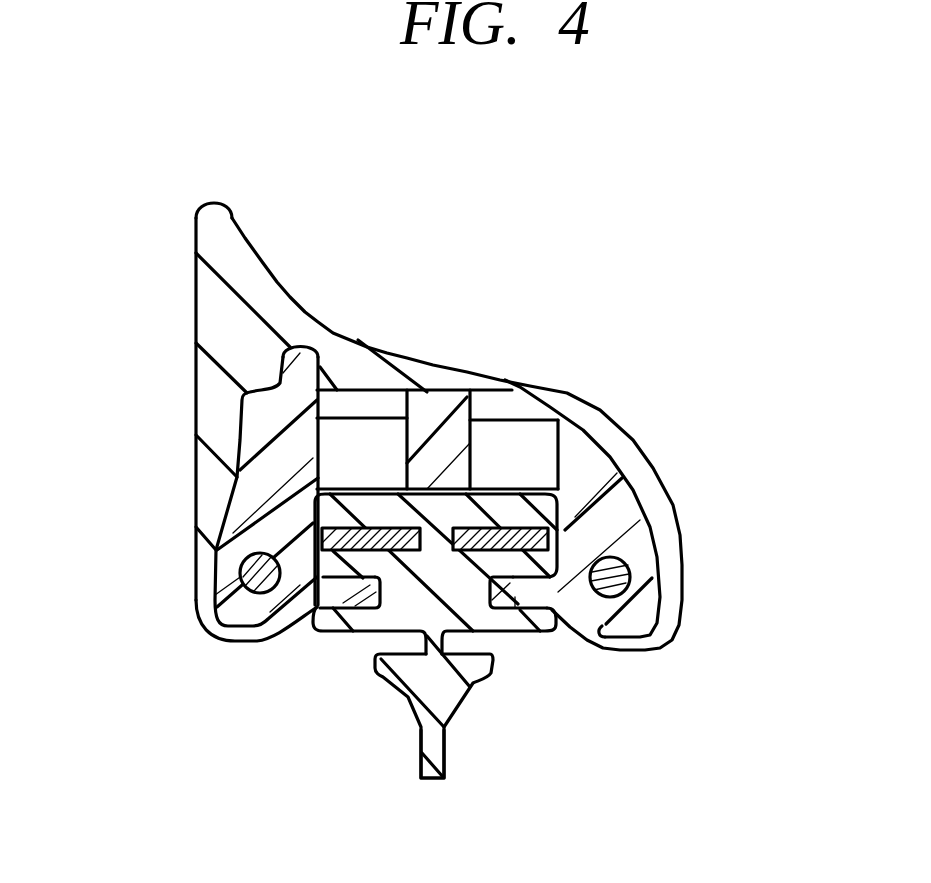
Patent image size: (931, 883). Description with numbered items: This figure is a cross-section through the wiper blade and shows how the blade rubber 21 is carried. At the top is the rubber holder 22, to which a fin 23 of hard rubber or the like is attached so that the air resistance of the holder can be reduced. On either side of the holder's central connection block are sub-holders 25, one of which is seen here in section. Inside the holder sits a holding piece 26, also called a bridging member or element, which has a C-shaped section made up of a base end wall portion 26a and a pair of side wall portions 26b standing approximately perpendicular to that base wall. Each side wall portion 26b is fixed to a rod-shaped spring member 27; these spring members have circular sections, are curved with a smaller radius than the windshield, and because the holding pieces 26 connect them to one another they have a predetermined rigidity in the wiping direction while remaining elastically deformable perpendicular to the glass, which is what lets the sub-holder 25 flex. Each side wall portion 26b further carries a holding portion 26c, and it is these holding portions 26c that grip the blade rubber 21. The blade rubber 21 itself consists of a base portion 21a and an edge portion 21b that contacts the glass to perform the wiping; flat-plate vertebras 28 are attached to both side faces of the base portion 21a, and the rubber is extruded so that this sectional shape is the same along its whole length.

The blade rubber 21 is at (476, 725).
The base portion 21a is at (440, 508).
The edge portion 21b is at (417, 707).
The rubber holder 22 is at (635, 232).
The fin 23 is at (215, 233).
The sub-holder 25 is at (610, 398).
The holding piece 26 is at (214, 490).
The base end wall portion 26a is at (428, 410).
The side wall portion 26b is at (263, 437).
The holding portion 26c is at (320, 620).
The rod-shaped spring member 27 is at (629, 583).
The vertebra 28 is at (384, 528).